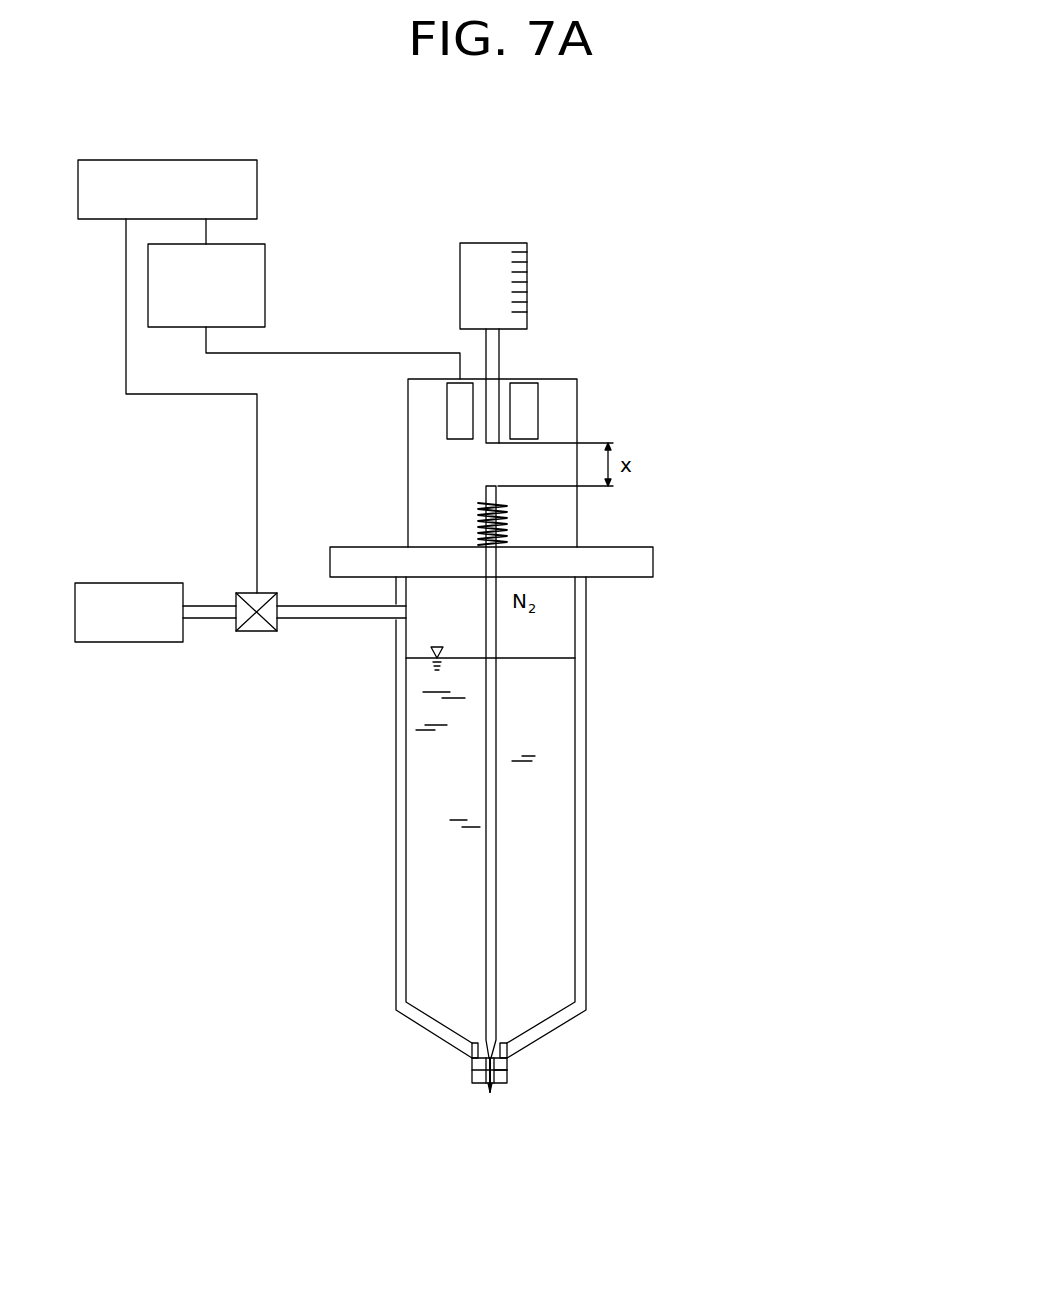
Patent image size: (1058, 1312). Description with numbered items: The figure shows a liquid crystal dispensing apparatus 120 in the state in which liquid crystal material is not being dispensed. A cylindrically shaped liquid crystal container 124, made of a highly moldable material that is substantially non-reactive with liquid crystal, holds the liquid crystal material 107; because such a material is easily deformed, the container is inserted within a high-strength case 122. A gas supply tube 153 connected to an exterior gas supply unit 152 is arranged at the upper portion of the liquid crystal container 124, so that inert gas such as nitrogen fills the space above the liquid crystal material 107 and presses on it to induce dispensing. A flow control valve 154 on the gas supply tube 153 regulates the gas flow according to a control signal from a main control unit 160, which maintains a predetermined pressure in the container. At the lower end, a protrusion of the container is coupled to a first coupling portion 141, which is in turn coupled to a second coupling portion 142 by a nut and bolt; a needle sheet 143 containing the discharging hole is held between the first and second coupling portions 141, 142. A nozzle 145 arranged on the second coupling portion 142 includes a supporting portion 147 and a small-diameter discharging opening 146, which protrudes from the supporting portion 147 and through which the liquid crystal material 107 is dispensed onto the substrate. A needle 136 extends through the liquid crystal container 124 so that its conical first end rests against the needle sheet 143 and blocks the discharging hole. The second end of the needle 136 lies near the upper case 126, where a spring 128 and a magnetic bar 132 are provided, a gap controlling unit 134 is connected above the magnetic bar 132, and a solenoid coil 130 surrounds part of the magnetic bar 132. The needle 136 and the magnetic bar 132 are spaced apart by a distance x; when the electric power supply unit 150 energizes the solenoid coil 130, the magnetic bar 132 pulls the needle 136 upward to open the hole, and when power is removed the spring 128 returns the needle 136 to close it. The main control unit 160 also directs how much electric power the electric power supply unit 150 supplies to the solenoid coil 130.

The liquid crystal material 107 is at (423, 783).
The liquid crystal dispensing apparatus 120 is at (612, 278).
The case 122 is at (586, 728).
The liquid crystal container 124 is at (575, 806).
The upper case 126 is at (577, 413).
The spring 128 is at (480, 518).
The solenoid coil 130 is at (455, 413).
The magnetic bar 132 is at (499, 357).
The gap controlling unit 134 is at (478, 253).
The needle 136 is at (496, 882).
The first coupling portion 141 is at (472, 1052).
The second coupling portion 142 is at (472, 1072).
The needle sheet 143 is at (503, 1062).
The nozzle 145 is at (502, 1095).
The discharging opening 146 is at (485, 1093).
The supporting portion 147 is at (503, 1080).
The electric power supply unit 150 is at (265, 297).
The gas supply unit 152 is at (128, 642).
The gas supply tube 153 is at (323, 618).
The flow control valve 154 is at (254, 631).
The main control unit 160 is at (183, 160).